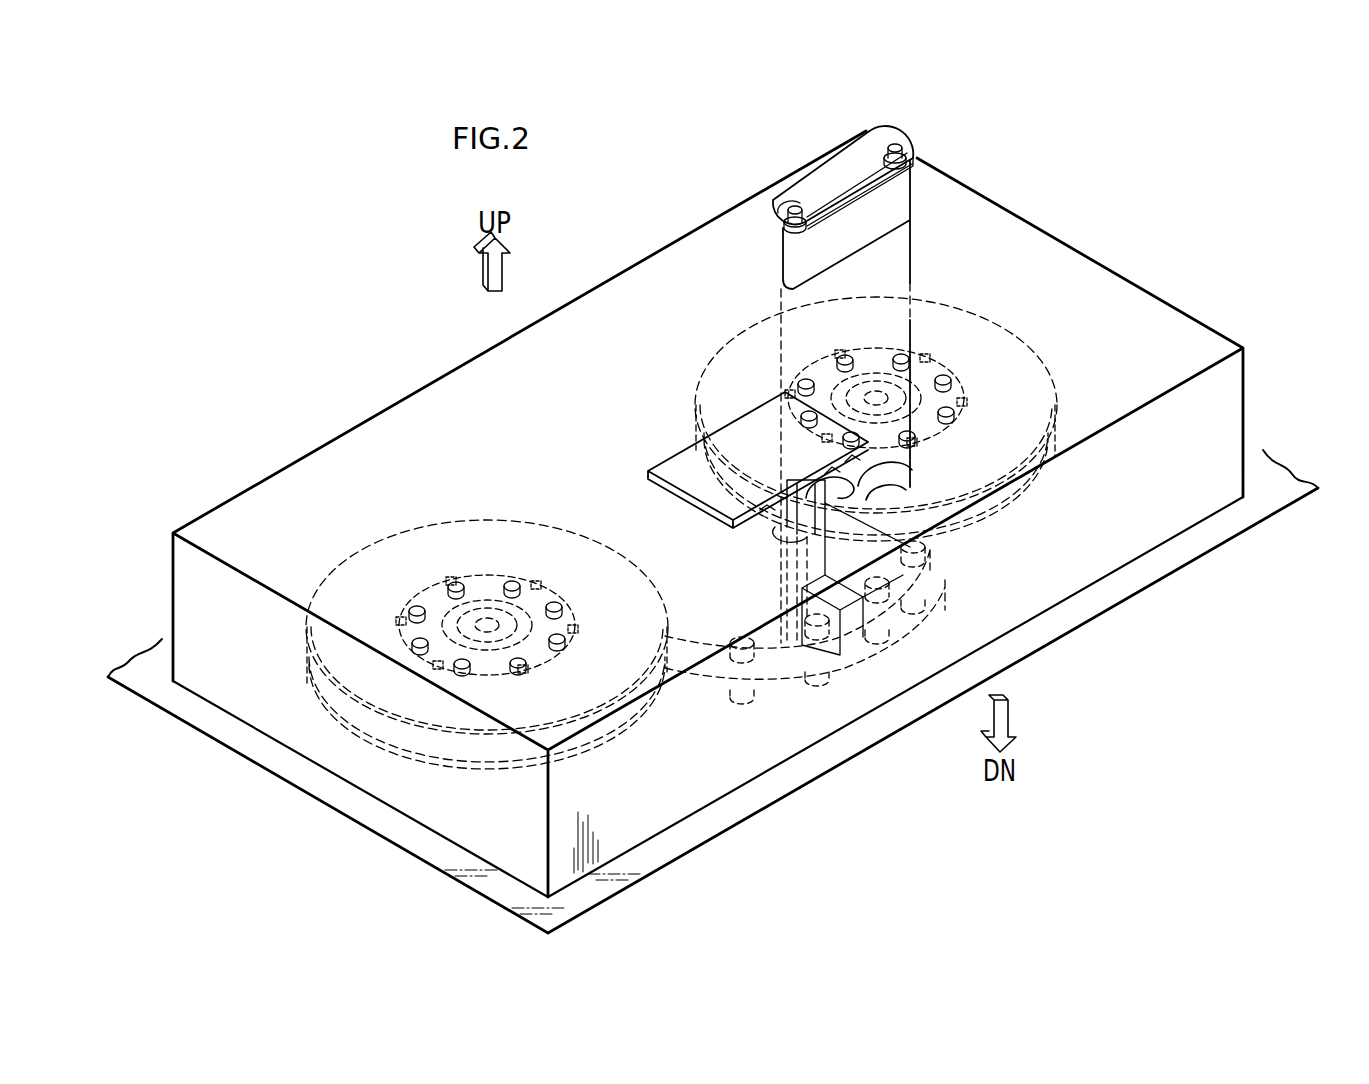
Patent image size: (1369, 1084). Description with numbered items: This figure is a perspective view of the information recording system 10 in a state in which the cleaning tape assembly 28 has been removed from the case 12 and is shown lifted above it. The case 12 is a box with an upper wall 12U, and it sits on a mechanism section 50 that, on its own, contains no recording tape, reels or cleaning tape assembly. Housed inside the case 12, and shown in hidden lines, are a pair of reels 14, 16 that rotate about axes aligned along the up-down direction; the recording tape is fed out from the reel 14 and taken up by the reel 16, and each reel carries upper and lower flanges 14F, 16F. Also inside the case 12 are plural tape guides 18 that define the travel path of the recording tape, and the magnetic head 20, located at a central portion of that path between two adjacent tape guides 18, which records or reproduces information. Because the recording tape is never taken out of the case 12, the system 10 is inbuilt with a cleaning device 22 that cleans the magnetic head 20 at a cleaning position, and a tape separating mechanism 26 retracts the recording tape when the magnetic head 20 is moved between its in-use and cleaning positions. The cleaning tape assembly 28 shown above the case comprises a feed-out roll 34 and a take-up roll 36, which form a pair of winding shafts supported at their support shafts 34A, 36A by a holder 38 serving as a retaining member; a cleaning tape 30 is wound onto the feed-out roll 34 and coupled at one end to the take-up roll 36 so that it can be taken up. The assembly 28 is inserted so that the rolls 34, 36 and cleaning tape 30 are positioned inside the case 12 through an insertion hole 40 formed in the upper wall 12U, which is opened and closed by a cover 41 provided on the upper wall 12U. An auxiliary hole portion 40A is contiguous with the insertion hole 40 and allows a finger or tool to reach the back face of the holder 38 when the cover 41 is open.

The information recording system 10 is at (708, 522).
The case 12 is at (1112, 211).
The upper wall 12U is at (622, 292).
The reel 14 is at (912, 391).
The flange 14F is at (1062, 420).
The reel 16 is at (487, 649).
The flange 16F is at (506, 740).
The tape guides 18 is at (812, 684).
The magnetic head 20 is at (845, 666).
The cleaning device 22 is at (859, 380).
The tape separating mechanism 26 is at (786, 566).
The cleaning tape assembly 28 is at (859, 380).
The cleaning tape 30 is at (880, 217).
The feed-out roll 34 is at (878, 151).
The support shaft 34A is at (893, 143).
The take-up roll 36 is at (742, 218).
The support shaft 36A is at (777, 201).
The holder 38 is at (823, 188).
The insertion hole 40 is at (894, 481).
The auxiliary hole portion 40A is at (835, 515).
The cover 41 is at (752, 430).
The mechanism section 50 is at (1172, 556).